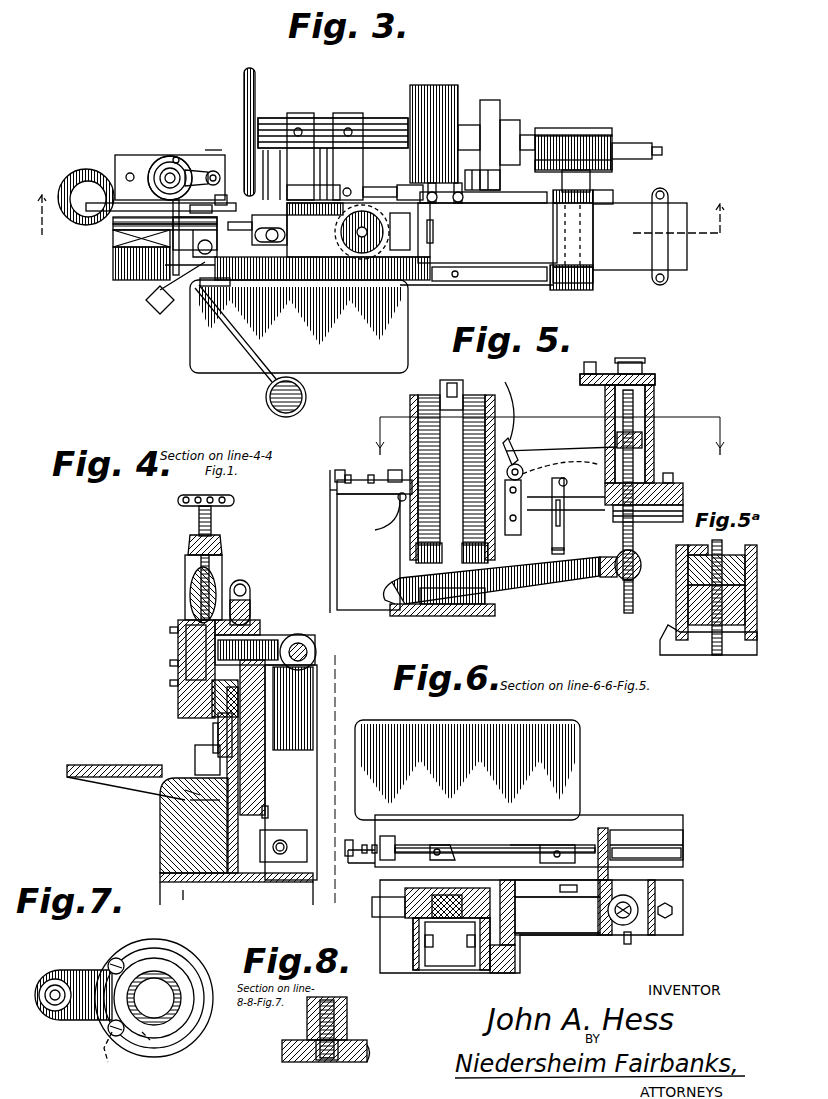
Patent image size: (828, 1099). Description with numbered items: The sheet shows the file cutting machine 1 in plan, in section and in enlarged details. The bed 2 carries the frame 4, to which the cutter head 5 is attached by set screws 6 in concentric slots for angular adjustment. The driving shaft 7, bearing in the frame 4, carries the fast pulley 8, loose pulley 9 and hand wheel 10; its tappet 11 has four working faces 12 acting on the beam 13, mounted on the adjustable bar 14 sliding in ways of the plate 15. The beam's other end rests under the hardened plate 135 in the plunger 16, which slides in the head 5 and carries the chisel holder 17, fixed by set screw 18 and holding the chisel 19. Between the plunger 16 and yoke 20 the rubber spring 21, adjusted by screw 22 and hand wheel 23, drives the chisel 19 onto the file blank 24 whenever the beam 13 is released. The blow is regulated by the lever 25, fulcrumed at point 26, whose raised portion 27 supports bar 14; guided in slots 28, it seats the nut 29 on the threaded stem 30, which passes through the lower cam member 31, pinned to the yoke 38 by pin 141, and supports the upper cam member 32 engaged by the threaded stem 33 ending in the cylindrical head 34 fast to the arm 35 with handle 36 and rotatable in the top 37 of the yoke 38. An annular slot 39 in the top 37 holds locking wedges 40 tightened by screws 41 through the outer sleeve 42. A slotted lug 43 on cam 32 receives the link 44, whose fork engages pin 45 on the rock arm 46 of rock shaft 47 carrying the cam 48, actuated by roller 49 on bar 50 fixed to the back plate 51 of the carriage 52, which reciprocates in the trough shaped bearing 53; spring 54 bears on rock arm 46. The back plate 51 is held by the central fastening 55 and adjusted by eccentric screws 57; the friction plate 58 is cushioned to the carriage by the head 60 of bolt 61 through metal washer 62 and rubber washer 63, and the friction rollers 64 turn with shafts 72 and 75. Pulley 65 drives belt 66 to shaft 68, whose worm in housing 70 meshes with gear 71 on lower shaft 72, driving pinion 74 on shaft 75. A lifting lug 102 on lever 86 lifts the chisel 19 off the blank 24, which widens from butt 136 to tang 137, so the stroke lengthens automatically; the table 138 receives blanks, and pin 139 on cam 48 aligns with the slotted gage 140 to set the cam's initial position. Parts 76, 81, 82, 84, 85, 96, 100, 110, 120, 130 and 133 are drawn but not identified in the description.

In FIG. 3, the file cutting machine 1 is at (333, 107).
In FIG. 4, the bed 2 is at (160, 856).
In FIG. 5, the frame 4 is at (410, 412).
In FIG. 4, the frame 4 is at (315, 680).
In FIG. 6, the frame 4 is at (405, 973).
In FIG. 3, the cutter head 5 is at (322, 248).
In FIG. 4, the cutter head 5 is at (180, 650).
In FIG. 5, the set screws 6 is at (549, 434).
In FIG. 3, the driving shaft 7 is at (270, 122).
In FIG. 3, the fast pulley 8 is at (436, 144).
In FIG. 7, the fast pulley 8 is at (134, 1059).
In FIG. 3, the loose pulley 9 is at (460, 100).
In FIG. 3, the hand wheel 10 is at (250, 80).
In FIG. 3, the cam or tappet 11 is at (310, 116).
In FIG. 4, the cam or tappet 11 is at (300, 638).
In FIG. 4, the projections or working faces 12 is at (310, 644).
In FIG. 6, the projections or working faces 12 is at (403, 850).
In FIG. 3, the beam 13 is at (325, 165).
In FIG. 5, the beam 13 is at (478, 380).
In FIG. 4, the beam 13 is at (255, 636).
In FIG. 5, the adjustable bar 14 is at (452, 477).
In FIG. 4, the adjustable bar 14 is at (248, 738).
In FIG. 6, the adjustable bar 14 is at (410, 912).
In FIG. 4, the plate 15 is at (265, 766).
In FIG. 6, the plate 15 is at (450, 948).
In FIG. 4, the plunger 16 is at (180, 622).
In FIG. 4, the chisel holder 17 is at (216, 716).
In FIG. 4, the set screw 18 is at (172, 684).
In FIG. 4, the chisel 19 is at (212, 750).
In FIG. 4, the yoke 20 is at (222, 548).
In FIG. 4, the spring or resilient member 21 is at (192, 586).
In FIG. 4, the screw 22 is at (190, 561).
In FIG. 3, the hand wheel 23 is at (360, 260).
In FIG. 4, the hand wheel 23 is at (236, 500).
In FIG. 4, the file blank 24 is at (195, 760).
In FIG. 6, the file blank 24 is at (525, 846).
In FIG. 3, the lever 25 is at (232, 170).
In FIG. 5, the lever 25 is at (540, 583).
In FIG. 4, the lever 25 is at (266, 838).
In FIG. 6, the lever 25 is at (372, 904).
In FIG. 5, the fulcrum point 26 is at (385, 600).
In FIG. 4, the fulcrum point 26 is at (265, 881).
In FIG. 5, the raised portion 27 is at (420, 553).
In FIG. 4, the raised portion 27 is at (268, 806).
In FIG. 5, the slots 28 is at (430, 568).
In FIG. 5, the nut 29 is at (641, 560).
In FIG. 5, the threaded stem 30 is at (634, 600).
In FIG. 5A, the threaded stem 30 is at (722, 652).
In FIG. 5, the lower cam member 31 is at (648, 490).
In FIG. 5A, the lower cam member 31 is at (680, 580).
In FIG. 5, the upper cam member 32 is at (645, 480).
In FIG. 5A, the upper cam member 32 is at (716, 557).
In FIG. 6, the upper cam member 32 is at (640, 885).
In FIG. 5, the threaded stem 33 is at (655, 405).
In FIG. 5A, the threaded stem 33 is at (716, 584).
In FIG. 4, the threaded stem 33 is at (185, 805).
In FIG. 6, the threaded stem 33 is at (655, 905).
In FIG. 5, the cylindrical head 34 is at (640, 366).
In FIG. 7, the cylindrical head 34 is at (154, 998).
In FIG. 3, the arm 35 is at (200, 172).
In FIG. 5, the arm 35 is at (600, 375).
In FIG. 7, the arm 35 is at (80, 972).
In FIG. 3, the handle 36 is at (182, 160).
In FIG. 5, the handle 36 is at (590, 362).
In FIG. 7, the handle 36 is at (48, 985).
In FIG. 3, the top of yoke 37 is at (150, 170).
In FIG. 5, the top of yoke 37 is at (605, 398).
In FIG. 7, the top of yoke 37 is at (200, 955).
In FIG. 8, the top of yoke 37 is at (360, 1042).
In FIG. 5, the yoke 38 is at (617, 440).
In FIG. 5A, the yoke 38 is at (692, 542).
In FIG. 6, the yoke 38 is at (672, 912).
In FIG. 7, the annular slot 39 is at (196, 1030).
In FIG. 8, the annular slot 39 is at (368, 1062).
In FIG. 8, the locking wedges 40 is at (316, 1062).
In FIG. 3, the screws 41 is at (176, 156).
In FIG. 7, the screws 41 is at (120, 958).
In FIG. 8, the screws 41 is at (327, 1060).
In FIG. 8, the outer sleeve 42 is at (340, 1010).
In FIG. 5, the slotted lug 43 is at (655, 430).
In FIG. 6, the slotted lug 43 is at (627, 944).
In FIG. 3, the link 44 is at (210, 148).
In FIG. 5, the link 44 is at (565, 446).
In FIG. 6, the link 44 is at (540, 935).
In FIG. 5, the pin 45 is at (512, 438).
In FIG. 5, the rock arm 46 is at (522, 462).
In FIG. 5, the rock shaft 47 is at (526, 507).
In FIG. 6, the rock shaft 47 is at (515, 925).
In FIG. 3, the cam 48 is at (200, 199).
In FIG. 5, the cam 48 is at (564, 480).
In FIG. 6, the cam 48 is at (532, 888).
In FIG. 5, the roller 49 is at (570, 522).
In FIG. 6, the bar 50 is at (568, 845).
In FIG. 3, the back plate 51 is at (190, 258).
In FIG. 6, the back plate 51 is at (609, 836).
In FIG. 3, the carriage 52 is at (215, 290).
In FIG. 5, the carriage 52 is at (397, 464).
In FIG. 4, the carriage 52 is at (165, 797).
In FIG. 6, the carriage 52 is at (430, 845).
In FIG. 3, the trough shaped bearing 53 is at (120, 224).
In FIG. 6, the trough shaped bearing 53 is at (683, 842).
In FIG. 3, the spring 54 is at (178, 266).
In FIG. 5, the spring 54 is at (505, 404).
In FIG. 6, the spring 54 is at (502, 959).
In FIG. 3, the central axial fastening 55 is at (160, 238).
In FIG. 6, the central axial fastening 55 is at (646, 857).
In FIG. 3, the screws 57 is at (140, 260).
In FIG. 3, the friction plate 58 is at (478, 244).
In FIG. 5, the friction plate 58 is at (337, 488).
In FIG. 6, the friction plate 58 is at (365, 830).
In FIG. 3, the head 60 is at (432, 243).
In FIG. 5, the head 60 is at (339, 466).
In FIG. 6, the head 60 is at (343, 843).
In FIG. 3, the screw or bolt 61 is at (395, 250).
In FIG. 5, the metal washer 62 is at (348, 474).
In FIG. 6, the metal washer 62 is at (379, 835).
In FIG. 5, the rubber washer 63 is at (371, 474).
In FIG. 6, the rubber washer 63 is at (392, 848).
In FIG. 3, the friction roller 64 is at (592, 225).
In FIG. 3, the pulley 65 is at (500, 118).
In FIG. 3, the belt 66 is at (505, 180).
In FIG. 3, the shaft 68 is at (525, 135).
In FIG. 3, the housing 70 is at (612, 127).
In FIG. 3, the gear 71 is at (612, 150).
In FIG. 3, the lower shaft 72 is at (592, 180).
In FIG. 3, the pinion 74 is at (592, 285).
In FIG. 3, the shaft 75 is at (613, 193).
In FIG. 3, the shaft 76 is at (655, 150).
In FIG. 3, the roller 81 is at (268, 392).
In FIG. 3, the block 82 is at (160, 314).
In FIG. 3, the wheel 84 is at (80, 178).
In FIG. 3, the plate 85 is at (118, 172).
In FIG. 3, the lever 86 is at (161, 202).
In FIG. 4, the lever 86 is at (205, 807).
In FIG. 3, the bar 96 is at (505, 200).
In FIG. 3, the roller 100 is at (268, 243).
In FIG. 4, the lifting lug 102 is at (335, 780).
In FIG. 3, the rod 110 is at (225, 268).
In FIG. 3, the block 120 is at (257, 227).
In FIG. 3, the link 130 is at (668, 205).
In FIG. 3, the plate 133 is at (312, 190).
In FIG. 4, the plate 133 is at (240, 705).
In FIG. 4, the hardened plate 135 is at (170, 630).
In FIG. 6, the butt 136 is at (452, 845).
In FIG. 6, the tang 137 is at (540, 842).
In FIG. 3, the table or shelf 138 is at (299, 326).
In FIG. 4, the table or shelf 138 is at (67, 768).
In FIG. 6, the table or shelf 138 is at (467, 770).
In FIG. 5, the pin 139 is at (546, 547).
In FIG. 6, the pin 139 is at (579, 892).
In FIG. 3, the slotted gage 140 is at (227, 192).
In FIG. 5, the slotted gage 140 is at (590, 420).
In FIG. 5A, the pin 141 is at (697, 638).